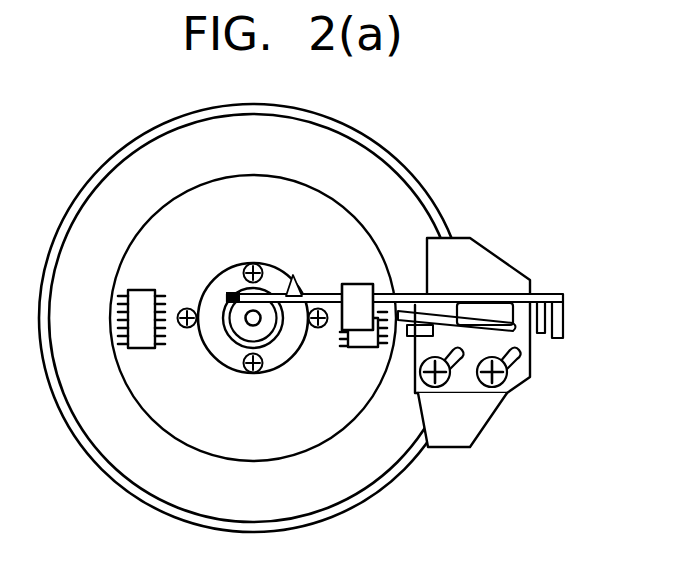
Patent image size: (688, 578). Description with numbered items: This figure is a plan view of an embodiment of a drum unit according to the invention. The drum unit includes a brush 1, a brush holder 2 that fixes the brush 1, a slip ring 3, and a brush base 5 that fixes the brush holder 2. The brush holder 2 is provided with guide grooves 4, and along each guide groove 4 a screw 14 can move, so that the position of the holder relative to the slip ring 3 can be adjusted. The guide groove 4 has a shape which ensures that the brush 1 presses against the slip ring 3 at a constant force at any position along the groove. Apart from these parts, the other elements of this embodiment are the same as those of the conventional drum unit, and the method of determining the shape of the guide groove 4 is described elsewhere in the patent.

The brush 1 is at (293, 275).
The brush holder 2 is at (358, 292).
The slip ring 3 is at (235, 315).
The guide groove 4 is at (512, 362).
The brush base 5 is at (458, 430).
The screw 14 is at (507, 378).